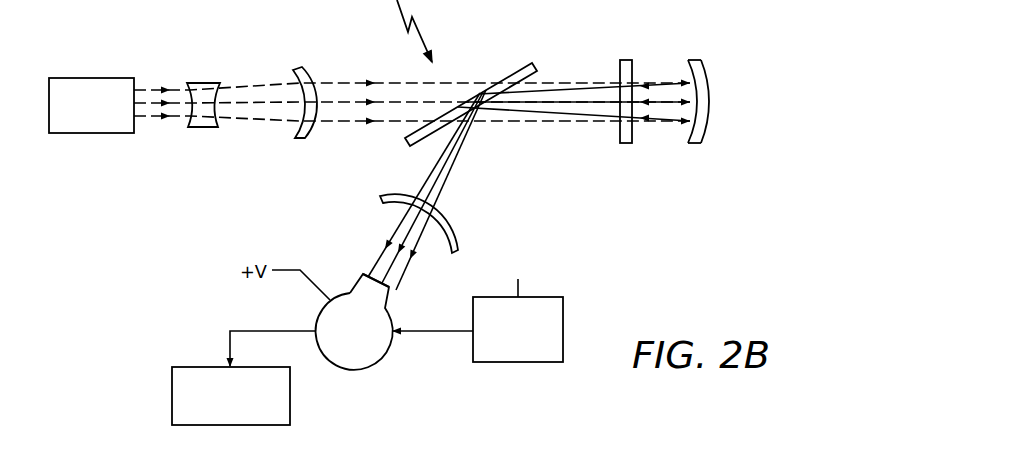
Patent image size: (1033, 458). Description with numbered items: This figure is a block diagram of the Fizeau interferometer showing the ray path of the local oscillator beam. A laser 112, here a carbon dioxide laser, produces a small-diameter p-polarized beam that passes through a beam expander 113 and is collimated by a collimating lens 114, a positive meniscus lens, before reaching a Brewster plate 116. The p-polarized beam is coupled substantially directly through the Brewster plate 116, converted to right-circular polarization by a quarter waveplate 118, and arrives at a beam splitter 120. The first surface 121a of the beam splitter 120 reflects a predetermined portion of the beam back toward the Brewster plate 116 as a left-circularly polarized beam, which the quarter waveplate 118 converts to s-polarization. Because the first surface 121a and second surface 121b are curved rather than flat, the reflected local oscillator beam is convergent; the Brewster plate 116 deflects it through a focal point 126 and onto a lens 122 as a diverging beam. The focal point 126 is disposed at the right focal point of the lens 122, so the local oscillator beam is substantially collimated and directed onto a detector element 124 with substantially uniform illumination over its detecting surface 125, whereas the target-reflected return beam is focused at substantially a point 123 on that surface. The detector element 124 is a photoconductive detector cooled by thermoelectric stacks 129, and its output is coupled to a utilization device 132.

The laser 112 is at (92, 77).
The beam expander 113 is at (205, 82).
The collimating lens 114 is at (305, 68).
The Brewster plate 116 is at (538, 72).
The quarter waveplate 118 is at (627, 60).
The beam splitter 120 is at (697, 58).
The first surface 121a is at (690, 70).
The second surface 121b is at (707, 72).
The lens 122 is at (457, 231).
The point 123 is at (392, 285).
The detector element 124 is at (380, 360).
The detecting surface 125 is at (365, 275).
The focal point 126 is at (468, 137).
The thermoelectric stacks 129 is at (500, 362).
The utilization device 132 is at (198, 367).